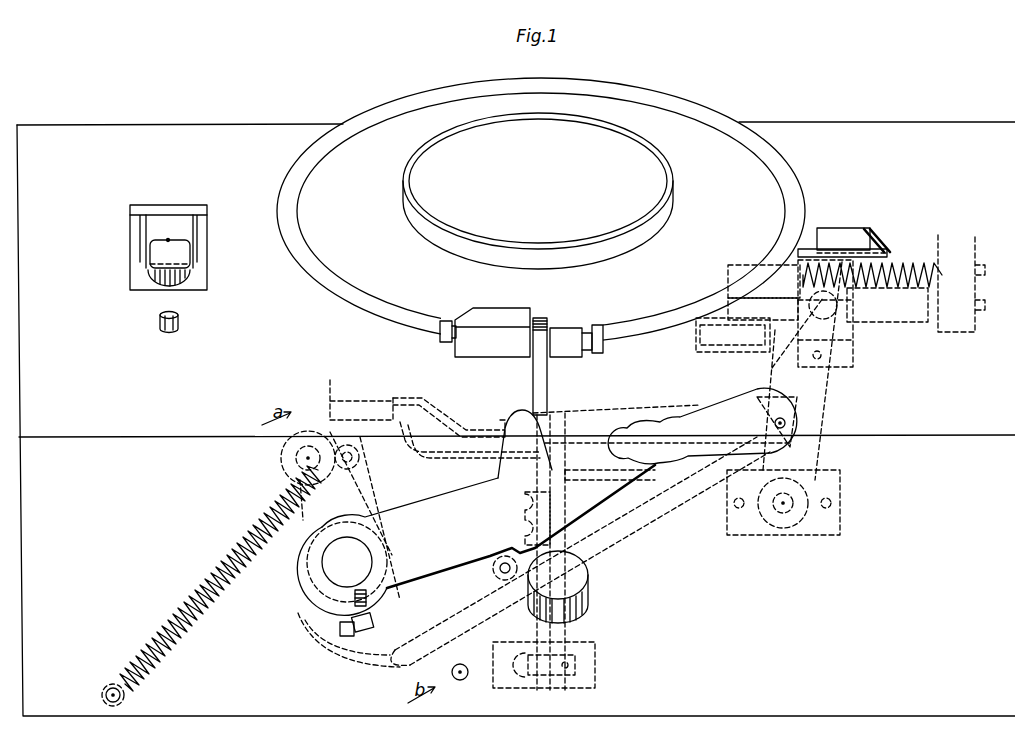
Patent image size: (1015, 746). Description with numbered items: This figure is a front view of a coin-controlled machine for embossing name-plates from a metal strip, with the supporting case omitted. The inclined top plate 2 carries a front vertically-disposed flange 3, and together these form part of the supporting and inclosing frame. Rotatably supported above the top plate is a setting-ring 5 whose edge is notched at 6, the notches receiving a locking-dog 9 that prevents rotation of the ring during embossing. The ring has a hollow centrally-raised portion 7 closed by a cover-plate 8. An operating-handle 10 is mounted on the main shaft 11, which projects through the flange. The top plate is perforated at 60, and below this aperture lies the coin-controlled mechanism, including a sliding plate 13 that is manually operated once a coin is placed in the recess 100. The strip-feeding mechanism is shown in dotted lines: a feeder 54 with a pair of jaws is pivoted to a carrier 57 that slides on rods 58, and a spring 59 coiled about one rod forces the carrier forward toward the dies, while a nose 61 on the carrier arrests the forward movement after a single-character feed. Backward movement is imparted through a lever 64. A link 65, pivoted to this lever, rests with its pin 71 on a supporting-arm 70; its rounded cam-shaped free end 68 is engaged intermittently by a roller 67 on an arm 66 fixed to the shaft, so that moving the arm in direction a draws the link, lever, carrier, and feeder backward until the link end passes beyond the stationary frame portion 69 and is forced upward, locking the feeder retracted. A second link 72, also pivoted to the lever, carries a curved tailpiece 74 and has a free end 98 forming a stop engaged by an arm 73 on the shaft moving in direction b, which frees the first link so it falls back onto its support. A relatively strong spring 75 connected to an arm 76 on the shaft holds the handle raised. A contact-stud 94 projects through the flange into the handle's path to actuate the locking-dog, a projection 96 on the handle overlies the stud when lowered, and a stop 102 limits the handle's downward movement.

The top plate 2 is at (516, 279).
The front vertically-disposed flange 3 is at (516, 420).
The ring, disk, or wheel 5 is at (541, 211).
The notches 6 is at (447, 320).
The centrally-raised portion 7 is at (672, 180).
The cover-plate 8 is at (538, 191).
The locking-dog 9 is at (548, 377).
The operating-handle 10 is at (397, 546).
The shaft 11 is at (347, 579).
The sliding plate 13 is at (155, 233).
The feeder 54 is at (730, 345).
The carrier 57 is at (900, 318).
The rods 58 is at (980, 305).
The spring 59 is at (898, 272).
The perforation 60 is at (200, 275).
The nose 61 is at (855, 243).
The lever 64 is at (815, 403).
The link 65 is at (620, 418).
The arm 66 is at (345, 498).
The roller 67 is at (290, 462).
The free end of the link 68 is at (412, 440).
The stationary portion of the framework 69 is at (408, 398).
The supporting-arm 70 is at (445, 415).
The pin 71 is at (512, 410).
The link 72 is at (674, 497).
The arm 73 is at (392, 656).
The curved tailpiece 74 is at (330, 630).
The spring 75 is at (203, 584).
The arm 76 is at (360, 468).
The contact-stud 94 is at (578, 578).
The projection 96 is at (648, 442).
The free end of the link 98 is at (425, 655).
The recess 100 is at (150, 290).
The stop 102 is at (462, 681).